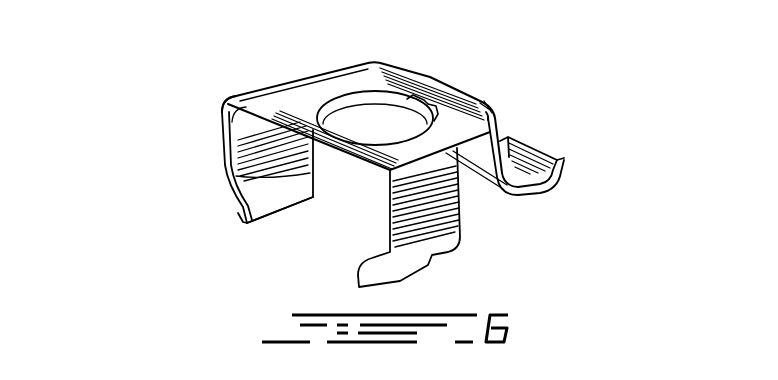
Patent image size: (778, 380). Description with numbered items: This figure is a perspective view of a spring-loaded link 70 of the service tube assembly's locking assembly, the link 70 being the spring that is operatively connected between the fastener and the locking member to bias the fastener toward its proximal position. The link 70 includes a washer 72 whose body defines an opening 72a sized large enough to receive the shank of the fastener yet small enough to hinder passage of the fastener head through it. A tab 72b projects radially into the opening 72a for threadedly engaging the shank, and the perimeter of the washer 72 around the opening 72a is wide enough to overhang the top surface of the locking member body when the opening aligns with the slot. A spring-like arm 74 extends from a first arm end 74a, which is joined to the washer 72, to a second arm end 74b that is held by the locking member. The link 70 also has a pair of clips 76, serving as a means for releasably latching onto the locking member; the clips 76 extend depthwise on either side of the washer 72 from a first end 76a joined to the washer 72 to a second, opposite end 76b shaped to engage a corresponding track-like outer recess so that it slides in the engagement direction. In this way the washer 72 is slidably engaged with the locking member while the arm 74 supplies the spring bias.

The link 70 is at (82, 78).
The washer 72 is at (322, 80).
The opening 72a is at (362, 106).
The tab 72b is at (418, 97).
The spring-like arm 74 is at (598, 152).
The first arm end 74a is at (480, 102).
The second arm end 74b is at (563, 176).
The clip 76 is at (195, 171).
The first end 76a is at (244, 118).
The second end 76b is at (266, 205).